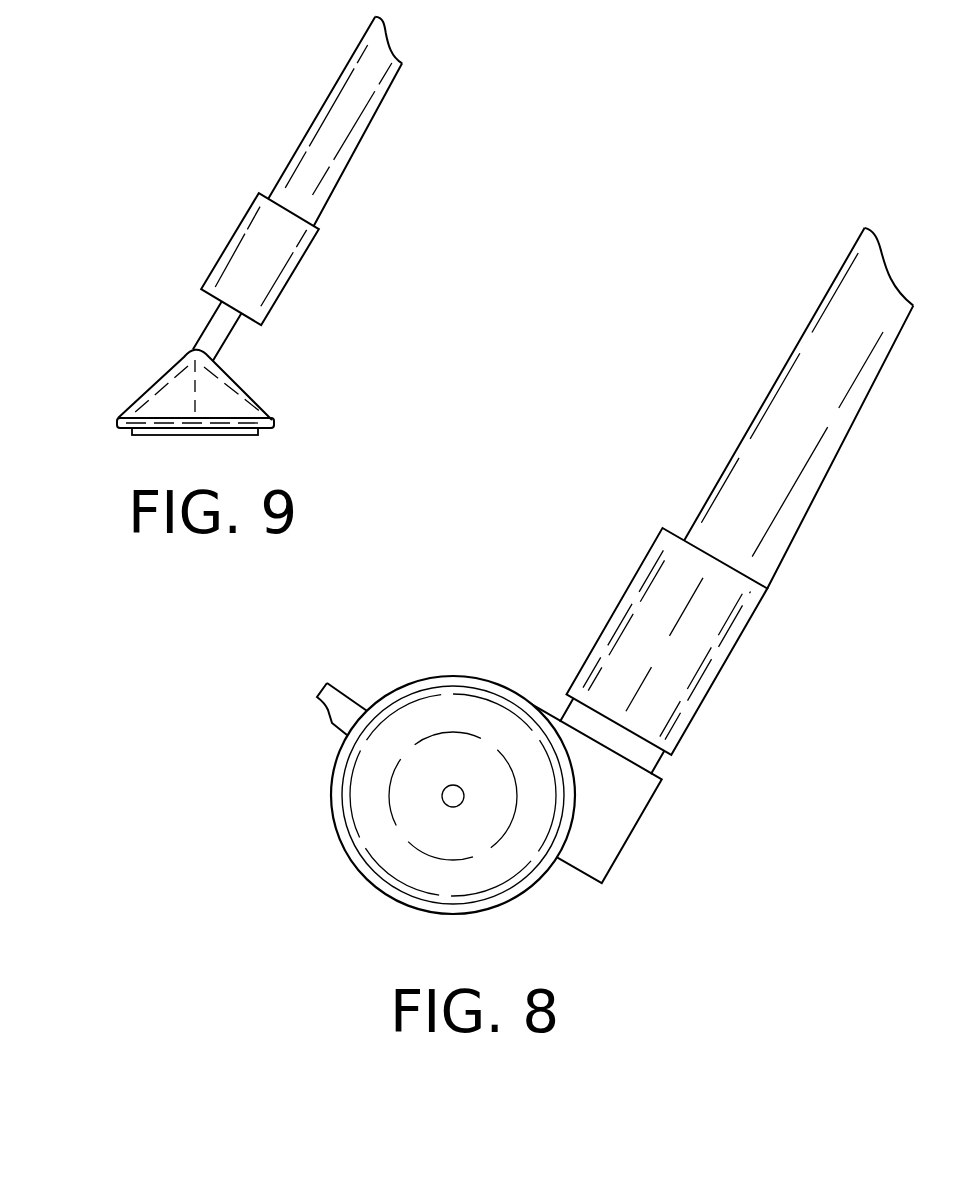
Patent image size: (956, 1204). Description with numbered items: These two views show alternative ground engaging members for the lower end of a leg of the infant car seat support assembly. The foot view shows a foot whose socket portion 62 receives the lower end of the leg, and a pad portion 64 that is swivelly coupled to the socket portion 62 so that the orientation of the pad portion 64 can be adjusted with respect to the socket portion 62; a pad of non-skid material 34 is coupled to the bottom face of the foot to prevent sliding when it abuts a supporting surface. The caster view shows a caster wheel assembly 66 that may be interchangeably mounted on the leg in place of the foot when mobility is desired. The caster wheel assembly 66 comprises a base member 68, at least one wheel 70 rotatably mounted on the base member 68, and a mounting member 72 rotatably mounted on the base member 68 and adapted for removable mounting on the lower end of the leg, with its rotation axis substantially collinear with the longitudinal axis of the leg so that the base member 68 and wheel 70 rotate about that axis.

In FIG. 9, the pad of non-skid material 34 is at (207, 432).
In FIG. 9, the socket portion 62 is at (278, 255).
In FIG. 9, the pad portion 64 is at (167, 383).
In FIG. 8, the caster wheel assembly 66 is at (378, 732).
In FIG. 8, the base member 68 is at (620, 830).
In FIG. 8, the wheel 70 is at (377, 830).
In FIG. 8, the mounting member 72 is at (570, 713).